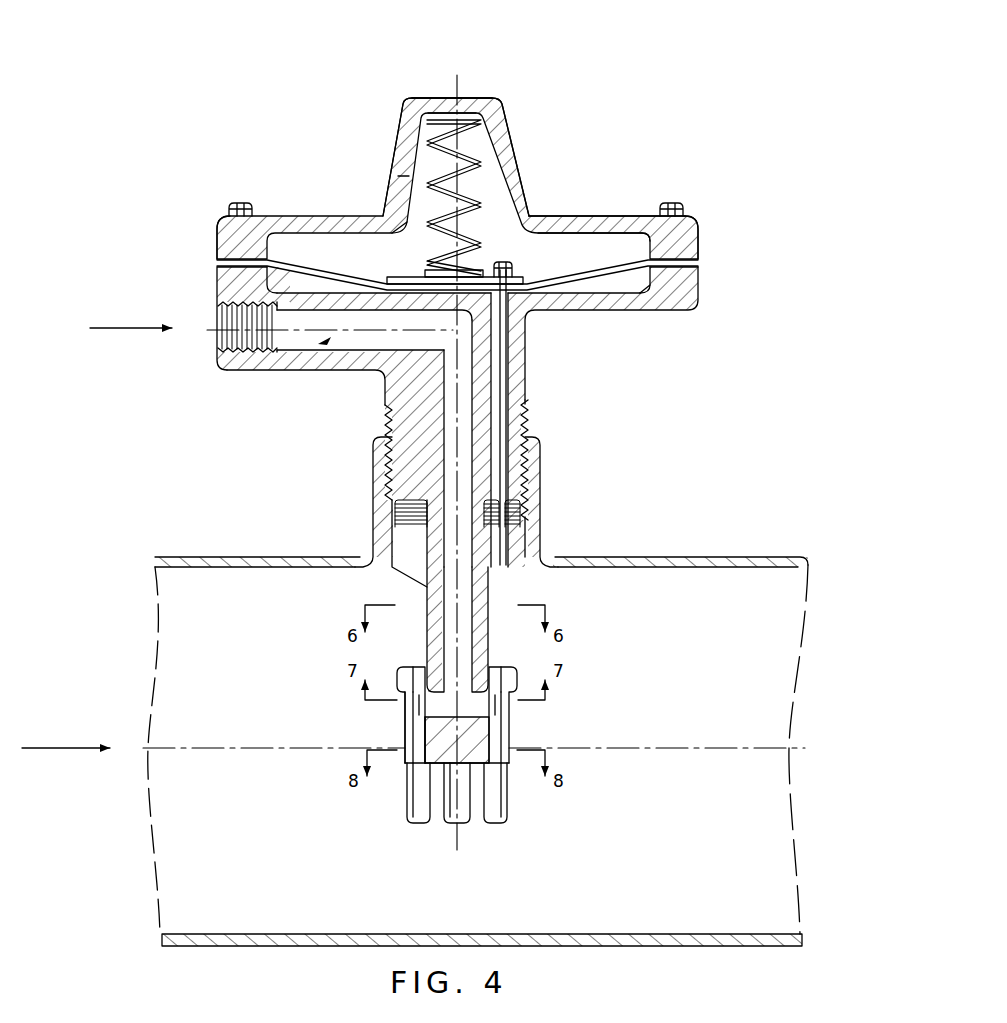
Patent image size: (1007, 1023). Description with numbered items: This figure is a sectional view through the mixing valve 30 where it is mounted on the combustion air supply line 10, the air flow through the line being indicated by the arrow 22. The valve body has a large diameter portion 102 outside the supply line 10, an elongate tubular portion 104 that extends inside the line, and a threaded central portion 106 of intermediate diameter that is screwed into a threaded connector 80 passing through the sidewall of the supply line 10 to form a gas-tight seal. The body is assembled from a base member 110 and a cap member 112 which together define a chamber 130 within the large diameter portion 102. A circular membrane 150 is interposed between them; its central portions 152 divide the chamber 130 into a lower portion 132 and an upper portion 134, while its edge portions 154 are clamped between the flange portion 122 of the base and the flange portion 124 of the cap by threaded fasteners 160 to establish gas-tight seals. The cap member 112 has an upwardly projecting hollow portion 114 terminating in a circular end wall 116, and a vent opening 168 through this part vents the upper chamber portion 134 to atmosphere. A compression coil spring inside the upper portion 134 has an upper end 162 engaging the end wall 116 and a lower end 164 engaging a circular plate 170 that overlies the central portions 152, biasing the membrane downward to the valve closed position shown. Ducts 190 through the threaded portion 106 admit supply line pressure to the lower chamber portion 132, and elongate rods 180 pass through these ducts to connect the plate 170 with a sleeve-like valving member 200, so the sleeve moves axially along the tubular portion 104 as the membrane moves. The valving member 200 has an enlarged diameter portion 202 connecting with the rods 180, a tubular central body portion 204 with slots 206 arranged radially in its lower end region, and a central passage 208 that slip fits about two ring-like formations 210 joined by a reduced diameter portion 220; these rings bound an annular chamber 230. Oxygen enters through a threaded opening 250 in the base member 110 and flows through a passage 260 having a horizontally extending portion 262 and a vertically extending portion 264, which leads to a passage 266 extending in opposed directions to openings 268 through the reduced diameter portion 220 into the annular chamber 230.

The supply line 10 is at (208, 548).
The arrow indicating combustion air flow 22 is at (68, 750).
The mixing valve 30 is at (597, 79).
The threaded connector 80 is at (553, 467).
The large diameter portion 102 is at (716, 232).
The tubular portion 104 is at (417, 589).
The threaded central portion 106 is at (535, 418).
The base member 110 is at (699, 286).
The cap member 112 is at (579, 211).
The upwardly projecting hollow portion 114 is at (514, 148).
The circular end wall 116 is at (466, 99).
The flange portion of base member 122 is at (697, 314).
The flange portion of cap member 124 is at (699, 220).
The chamber 130 is at (345, 261).
The lower chamber portion 132 is at (619, 287).
The upper chamber portion 134 is at (493, 226).
The membrane 150 is at (608, 261).
The central portions of membrane 152 is at (528, 285).
The edge portions of membrane 154 is at (258, 228).
The threaded fastener 160 is at (408, 112).
The upper end of spring 162 is at (488, 120).
The lower end of spring 164 is at (471, 270).
The vent opening 168 is at (400, 172).
The circular plate 170 is at (395, 272).
The elongate rod 180 is at (526, 300).
The duct 190 is at (502, 360).
The sleeve-like valving member 200 is at (525, 670).
The enlarged diameter portion 202 is at (397, 667).
The tubular central body portion 204 is at (520, 733).
The slots 206 is at (435, 808).
The central passage 208 is at (418, 733).
The ring-like formations 210 is at (421, 662).
The reduced diameter portion 220 is at (407, 762).
The annular chamber 230 is at (520, 727).
The threaded opening 250 is at (217, 341).
The passage 260 is at (310, 371).
The horizontally extending portion 262 is at (376, 347).
The vertically extending portion 264 is at (470, 383).
The passage 266 is at (405, 703).
The openings 268 is at (410, 713).